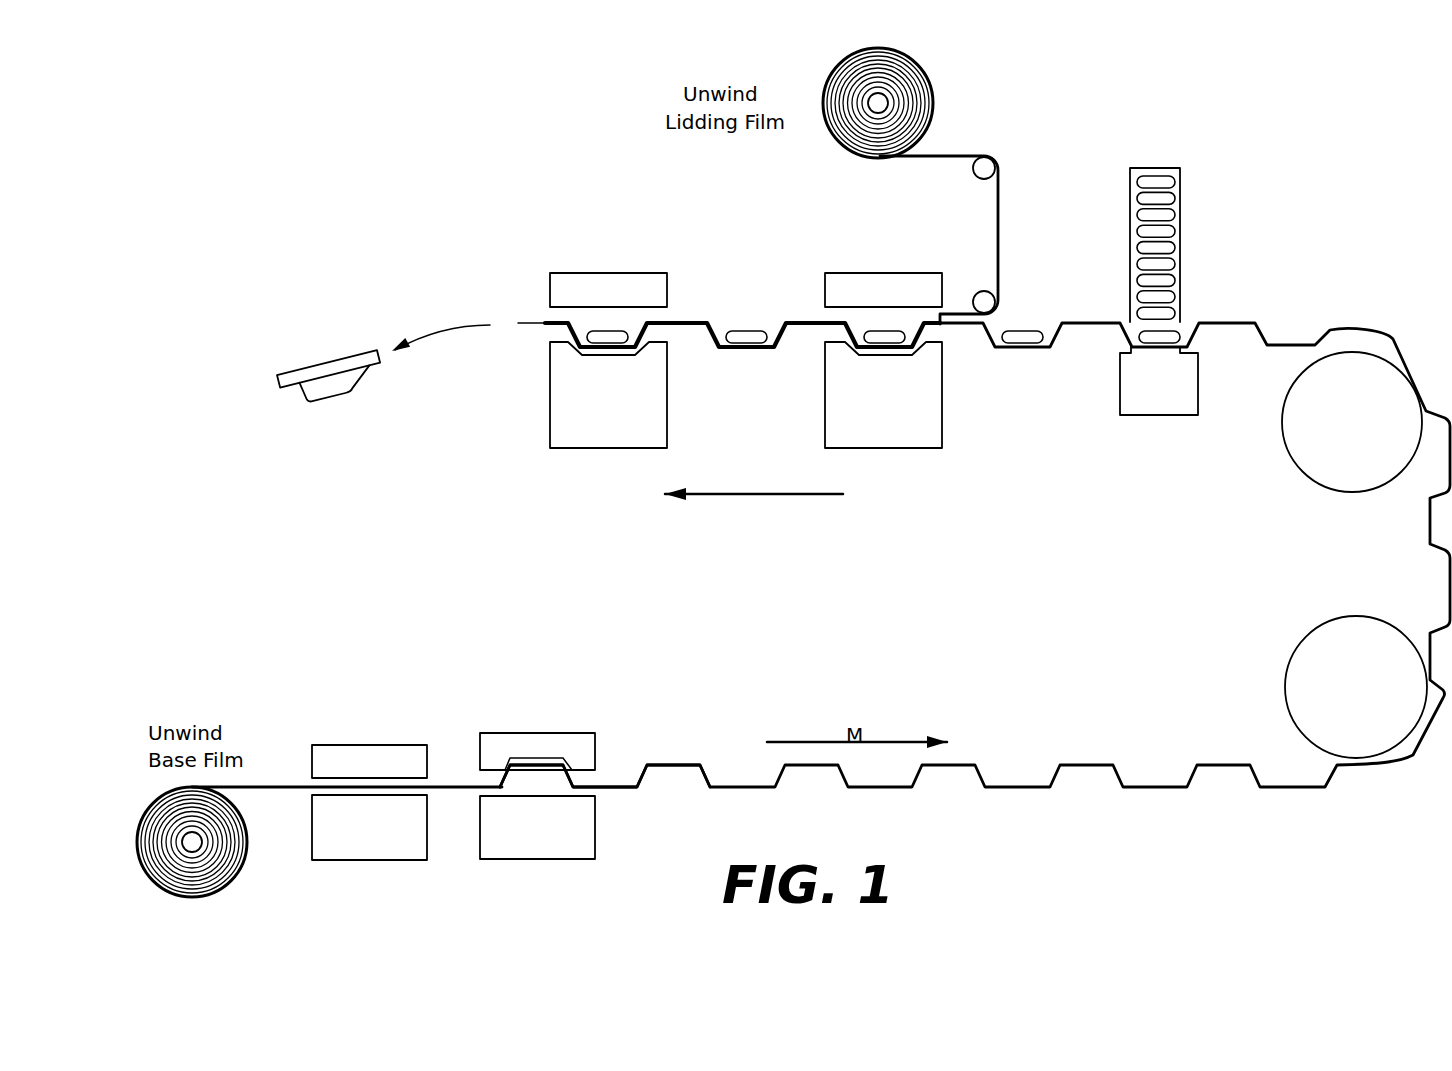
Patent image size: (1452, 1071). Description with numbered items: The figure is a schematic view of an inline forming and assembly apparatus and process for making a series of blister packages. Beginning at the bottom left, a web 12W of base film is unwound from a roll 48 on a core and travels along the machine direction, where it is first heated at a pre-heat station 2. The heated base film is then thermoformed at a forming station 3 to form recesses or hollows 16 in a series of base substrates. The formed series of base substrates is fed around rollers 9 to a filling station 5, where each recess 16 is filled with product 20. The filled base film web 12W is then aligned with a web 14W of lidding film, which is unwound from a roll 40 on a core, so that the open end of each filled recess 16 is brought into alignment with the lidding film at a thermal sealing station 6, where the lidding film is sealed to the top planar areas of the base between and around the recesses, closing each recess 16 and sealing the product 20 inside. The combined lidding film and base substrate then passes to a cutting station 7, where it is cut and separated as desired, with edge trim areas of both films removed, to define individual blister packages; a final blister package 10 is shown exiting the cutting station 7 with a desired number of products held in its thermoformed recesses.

The roll 48 is at (145, 810).
The web of base film 12W is at (278, 786).
The pre-heat station 2 is at (333, 745).
The forming station 3 is at (520, 732).
The recesses or hollows 16 is at (546, 770).
The blister package 10 is at (357, 357).
The cutting station 7 is at (652, 272).
The thermal sealing station 6 is at (917, 272).
The roll 40 is at (847, 143).
The web of lidding film 14W is at (998, 203).
The product 20 is at (1160, 178).
The filling station 5 is at (1180, 313).
The rollers 9 is at (1285, 412).